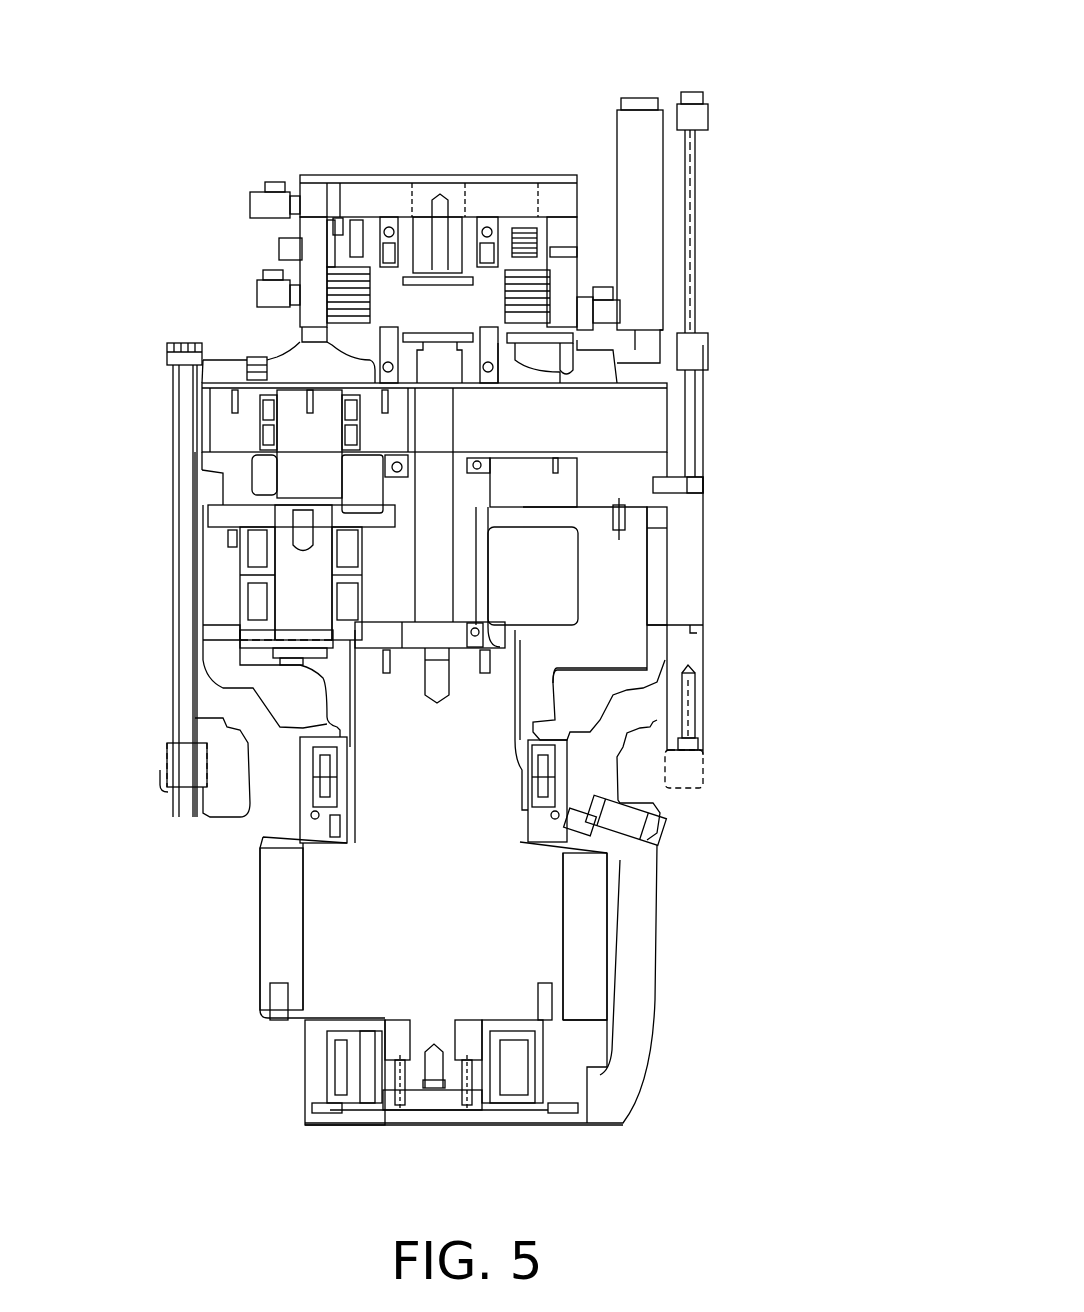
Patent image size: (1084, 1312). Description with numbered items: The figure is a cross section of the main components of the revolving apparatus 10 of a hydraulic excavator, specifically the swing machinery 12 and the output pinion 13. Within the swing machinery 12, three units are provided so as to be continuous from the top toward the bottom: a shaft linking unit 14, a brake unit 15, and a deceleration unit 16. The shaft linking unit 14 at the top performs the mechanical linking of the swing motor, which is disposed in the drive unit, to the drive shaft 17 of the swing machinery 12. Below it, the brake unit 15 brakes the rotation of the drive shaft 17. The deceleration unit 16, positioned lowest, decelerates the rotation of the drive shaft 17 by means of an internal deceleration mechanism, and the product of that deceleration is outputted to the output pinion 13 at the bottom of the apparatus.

The revolving apparatus 10 is at (240, 100).
The swing machinery 12 is at (227, 188).
The output pinion 13 is at (288, 967).
The shaft linking unit 14 is at (423, 235).
The brake unit 15 is at (297, 240).
The deceleration unit 16 is at (605, 575).
The drive shaft 17 is at (400, 308).